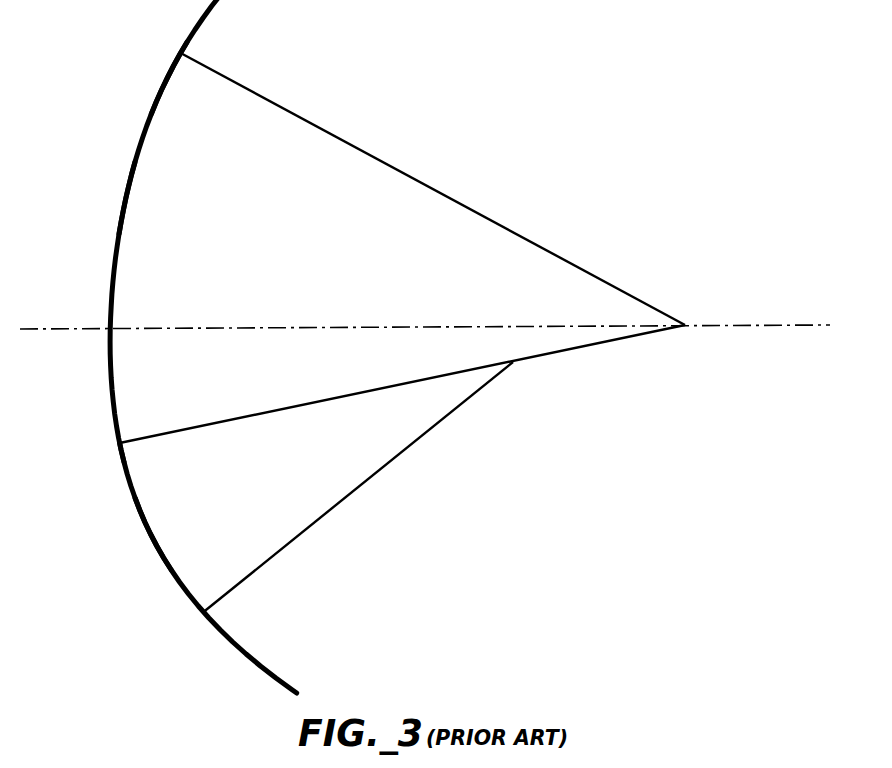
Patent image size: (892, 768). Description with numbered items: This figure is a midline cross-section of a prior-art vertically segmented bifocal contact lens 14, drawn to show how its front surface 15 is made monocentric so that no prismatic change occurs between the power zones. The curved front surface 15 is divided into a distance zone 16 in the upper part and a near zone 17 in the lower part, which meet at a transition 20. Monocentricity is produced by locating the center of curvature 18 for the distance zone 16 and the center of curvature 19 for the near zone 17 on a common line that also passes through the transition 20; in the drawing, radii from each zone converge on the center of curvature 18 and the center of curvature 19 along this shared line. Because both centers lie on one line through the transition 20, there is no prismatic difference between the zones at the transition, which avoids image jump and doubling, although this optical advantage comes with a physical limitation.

The bifocal contact lens 14 is at (232, 648).
The front surface 15 is at (152, 96).
The distance zone 16 is at (124, 203).
The near zone 17 is at (150, 535).
The center of curvature 18 is at (687, 324).
The center of curvature 19 is at (514, 363).
The transition 20 is at (121, 445).